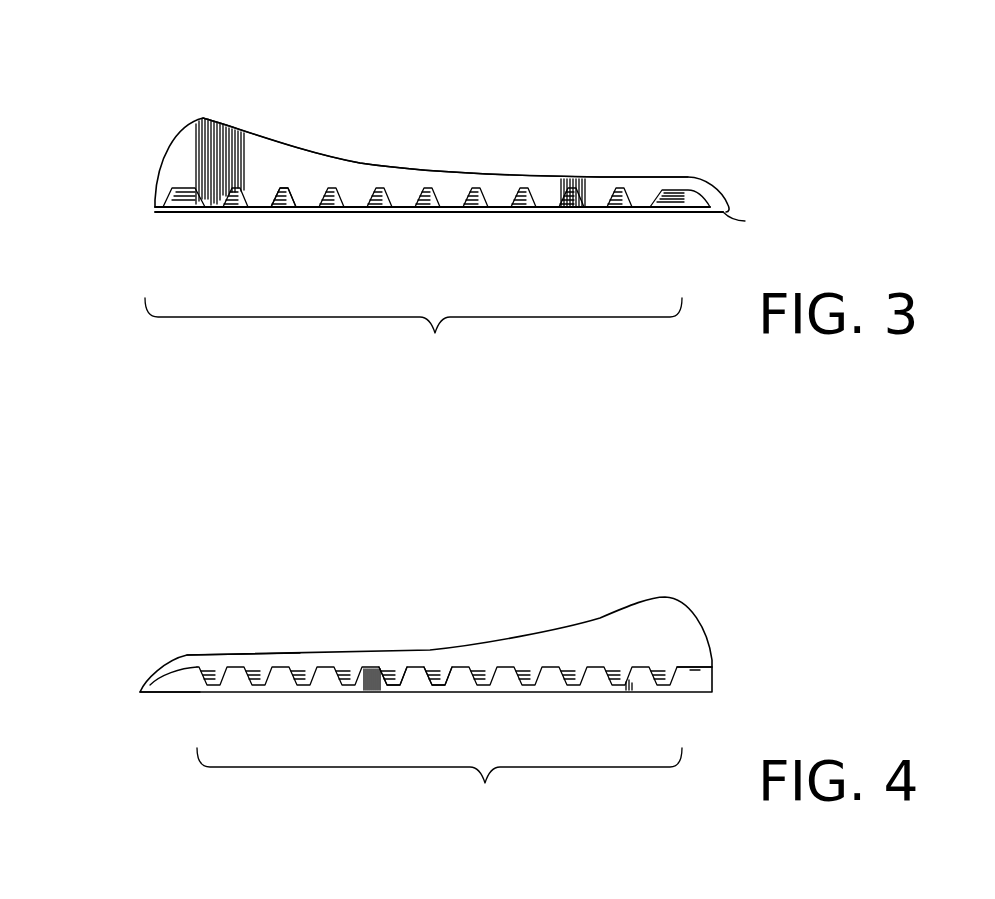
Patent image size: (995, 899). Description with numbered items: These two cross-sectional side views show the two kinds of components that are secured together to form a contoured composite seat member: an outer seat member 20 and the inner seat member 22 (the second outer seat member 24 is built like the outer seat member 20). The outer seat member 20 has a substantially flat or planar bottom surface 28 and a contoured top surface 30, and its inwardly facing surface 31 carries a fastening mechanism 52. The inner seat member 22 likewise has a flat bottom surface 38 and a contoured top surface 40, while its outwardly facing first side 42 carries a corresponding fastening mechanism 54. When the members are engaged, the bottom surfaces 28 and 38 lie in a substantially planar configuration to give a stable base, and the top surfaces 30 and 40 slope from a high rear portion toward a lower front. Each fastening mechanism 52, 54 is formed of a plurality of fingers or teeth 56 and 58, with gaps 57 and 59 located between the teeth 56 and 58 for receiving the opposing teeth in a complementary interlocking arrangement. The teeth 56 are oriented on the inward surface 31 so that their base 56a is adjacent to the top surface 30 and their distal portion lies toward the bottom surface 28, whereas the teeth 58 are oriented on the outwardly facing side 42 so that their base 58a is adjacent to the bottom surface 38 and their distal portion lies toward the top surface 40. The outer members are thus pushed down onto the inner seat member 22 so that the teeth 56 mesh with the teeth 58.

In FIG. 3, the seat member 20 is at (467, 172).
In FIG. 4, the seat member 22 is at (663, 597).
In FIG. 3, the seat member 24 is at (467, 172).
In FIG. 3, the bottom surface 28 is at (745, 221).
In FIG. 3, the contoured top surface 30 is at (647, 177).
In FIG. 3, the inwardly facing surface 31 is at (185, 162).
In FIG. 4, the bottom surface 38 is at (178, 693).
In FIG. 4, the contoured top surface 40 is at (168, 655).
In FIG. 4, the first side 42 is at (693, 675).
In FIG. 3, the fastening mechanism 52 is at (413, 332).
In FIG. 4, the fastening mechanism 54 is at (439, 784).
In FIG. 3, the teeth 56 is at (297, 203).
In FIG. 3, the base 56a is at (267, 188).
In FIG. 3, the gaps 57 is at (378, 203).
In FIG. 4, the teeth 58 is at (363, 675).
In FIG. 4, the base 58a is at (370, 692).
In FIG. 4, the gaps 59 is at (438, 678).